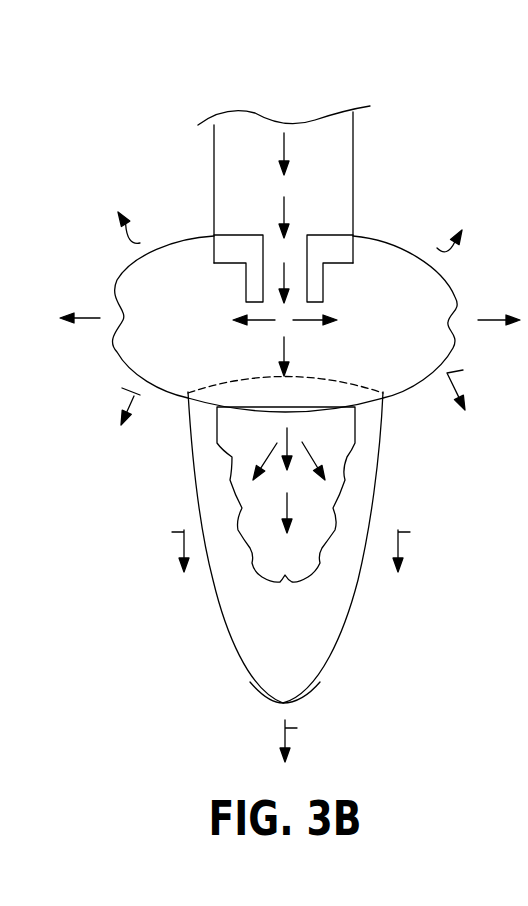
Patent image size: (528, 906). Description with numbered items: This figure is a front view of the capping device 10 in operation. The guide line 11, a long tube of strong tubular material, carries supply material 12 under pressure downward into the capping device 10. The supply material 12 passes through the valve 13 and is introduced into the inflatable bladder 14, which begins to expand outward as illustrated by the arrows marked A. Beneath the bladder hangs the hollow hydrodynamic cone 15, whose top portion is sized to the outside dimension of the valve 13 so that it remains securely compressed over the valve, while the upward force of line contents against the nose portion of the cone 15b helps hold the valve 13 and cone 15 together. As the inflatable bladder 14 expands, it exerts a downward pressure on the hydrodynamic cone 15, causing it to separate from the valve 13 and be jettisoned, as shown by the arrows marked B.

The capping device 10 is at (130, 88).
The guide line 11 is at (353, 170).
The supply material 12 is at (235, 172).
The valve 13 is at (337, 248).
The inflatable bladder 14 is at (456, 306).
The hollow hydrodynamic cone 15 is at (370, 514).
The nose portion of the cone 15b is at (278, 683).